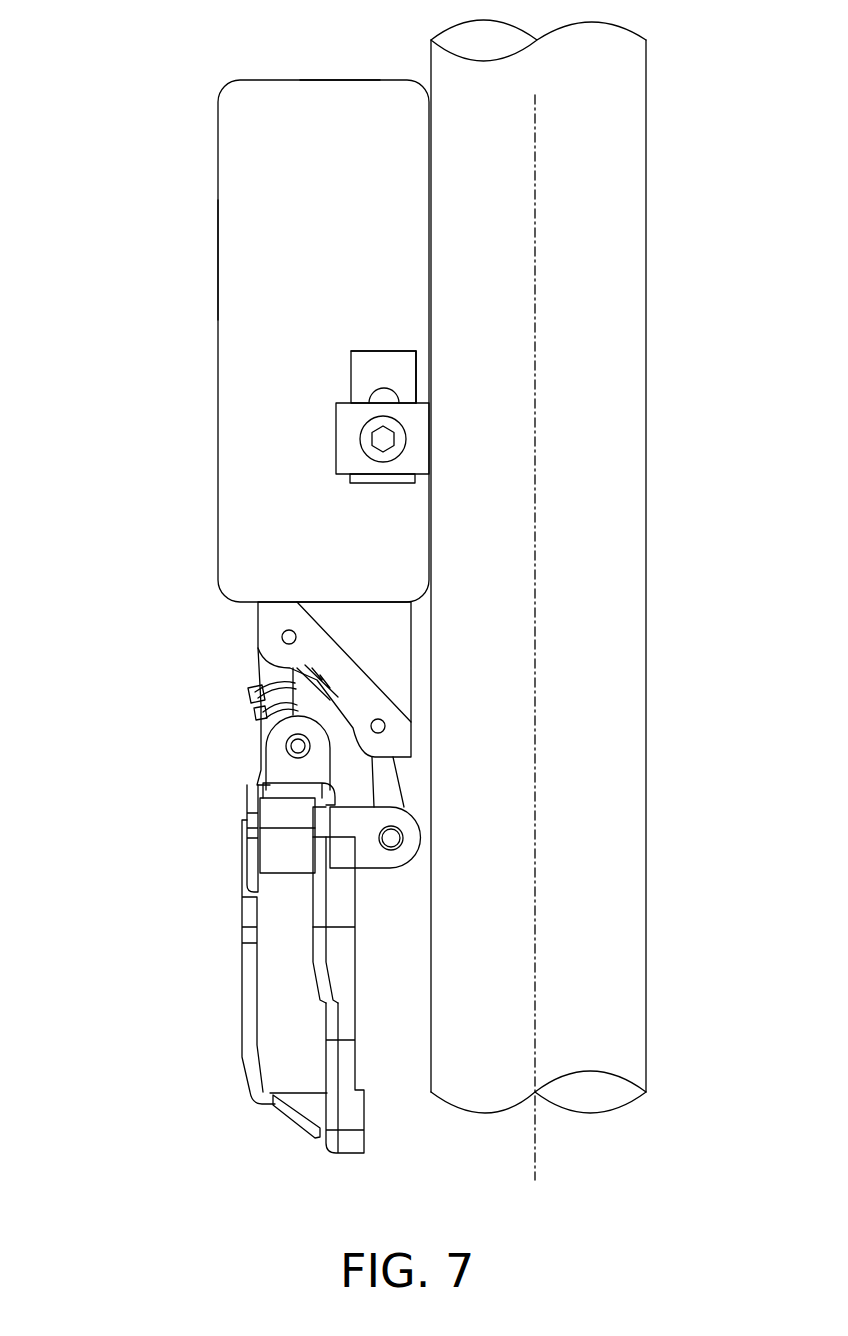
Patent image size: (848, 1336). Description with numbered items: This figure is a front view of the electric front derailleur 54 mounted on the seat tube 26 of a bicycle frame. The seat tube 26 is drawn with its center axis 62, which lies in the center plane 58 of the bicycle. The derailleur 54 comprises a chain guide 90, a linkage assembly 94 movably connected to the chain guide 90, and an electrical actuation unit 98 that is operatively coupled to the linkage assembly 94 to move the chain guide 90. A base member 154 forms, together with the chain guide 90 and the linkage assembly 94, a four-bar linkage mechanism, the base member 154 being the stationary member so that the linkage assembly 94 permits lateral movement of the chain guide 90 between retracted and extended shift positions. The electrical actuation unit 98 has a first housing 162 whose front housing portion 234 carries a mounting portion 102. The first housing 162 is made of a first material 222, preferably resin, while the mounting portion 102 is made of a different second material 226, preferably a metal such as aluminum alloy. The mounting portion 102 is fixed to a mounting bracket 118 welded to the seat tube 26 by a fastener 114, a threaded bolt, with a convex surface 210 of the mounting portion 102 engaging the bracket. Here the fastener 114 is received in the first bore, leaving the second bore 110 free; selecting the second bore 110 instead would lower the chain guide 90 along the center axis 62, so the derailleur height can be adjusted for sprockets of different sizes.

The seat tube 26 is at (648, 162).
The electric front derailleur 54 is at (105, 580).
The center plane 58 is at (537, 245).
The center axis 62 is at (536, 1125).
The chain guide 90 is at (238, 952).
The linkage assembly 94 is at (160, 782).
The electrical actuation unit 98 is at (133, 141).
The mounting portion 102 is at (410, 365).
The second bore 110 is at (372, 391).
The fastener 114 is at (400, 438).
The mounting bracket 118 is at (340, 467).
The base member 154 is at (372, 642).
The first housing 162 is at (282, 79).
The convex surface 210 is at (406, 376).
The first material 222 is at (247, 255).
The second material 226 is at (372, 358).
The front housing portion 234 is at (345, 108).